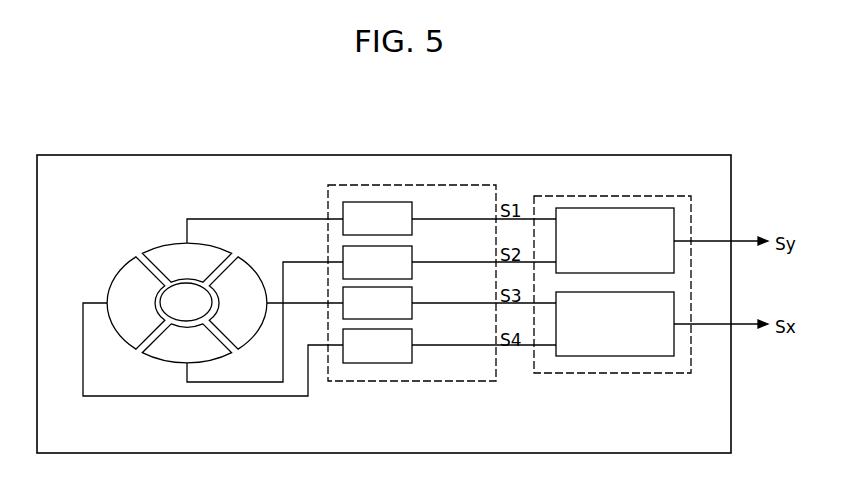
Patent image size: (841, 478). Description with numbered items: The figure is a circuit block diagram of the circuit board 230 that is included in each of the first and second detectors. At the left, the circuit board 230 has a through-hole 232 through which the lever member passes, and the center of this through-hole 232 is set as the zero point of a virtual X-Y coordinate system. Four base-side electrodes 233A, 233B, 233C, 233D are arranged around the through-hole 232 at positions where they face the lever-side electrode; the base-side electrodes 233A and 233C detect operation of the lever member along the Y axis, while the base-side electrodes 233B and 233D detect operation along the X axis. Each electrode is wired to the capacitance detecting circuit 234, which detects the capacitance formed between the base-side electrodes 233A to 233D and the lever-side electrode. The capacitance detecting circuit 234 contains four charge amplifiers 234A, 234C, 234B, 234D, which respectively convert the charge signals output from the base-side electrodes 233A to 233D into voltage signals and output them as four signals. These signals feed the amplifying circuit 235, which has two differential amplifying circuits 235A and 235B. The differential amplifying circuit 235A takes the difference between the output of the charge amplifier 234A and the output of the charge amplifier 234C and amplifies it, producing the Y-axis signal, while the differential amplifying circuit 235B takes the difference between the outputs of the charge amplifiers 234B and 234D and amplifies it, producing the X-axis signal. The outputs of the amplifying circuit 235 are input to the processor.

The circuit board 230 is at (653, 137).
The through-hole 232 is at (198, 322).
The base-side electrode 233A is at (162, 257).
The base-side electrode 233B is at (250, 280).
The base-side electrode 233C is at (162, 348).
The base-side electrode 233D is at (130, 285).
The capacitance detecting circuit 234 is at (407, 383).
The charge amplifier 234A is at (412, 207).
The charge amplifier 234B is at (412, 292).
The charge amplifier 234C is at (412, 251).
The charge amplifier 234D is at (412, 334).
The amplifying circuit 235 is at (552, 373).
The differential amplifying circuit 235A is at (605, 208).
The differential amplifying circuit 235B is at (615, 357).